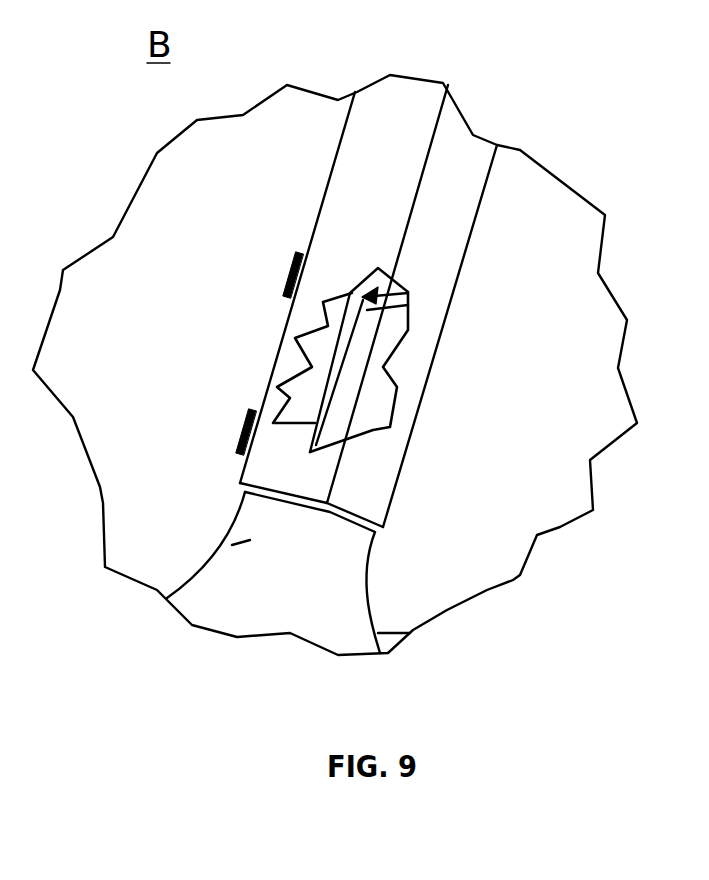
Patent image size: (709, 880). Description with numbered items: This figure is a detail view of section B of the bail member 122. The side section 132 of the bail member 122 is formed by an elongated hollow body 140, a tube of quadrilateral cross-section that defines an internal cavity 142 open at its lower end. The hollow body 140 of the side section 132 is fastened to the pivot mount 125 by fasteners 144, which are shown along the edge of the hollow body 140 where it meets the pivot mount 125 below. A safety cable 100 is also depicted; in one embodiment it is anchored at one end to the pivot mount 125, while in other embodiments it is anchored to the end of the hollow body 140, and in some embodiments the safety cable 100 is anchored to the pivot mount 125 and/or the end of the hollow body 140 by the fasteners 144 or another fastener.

The bail member 122 is at (590, 133).
The hollow body 140 is at (367, 193).
The side section 132 is at (470, 283).
The fasteners 144 is at (293, 270).
The internal cavity 142 is at (375, 347).
The safety cable 100 is at (333, 407).
The pivot mount 125 is at (253, 597).